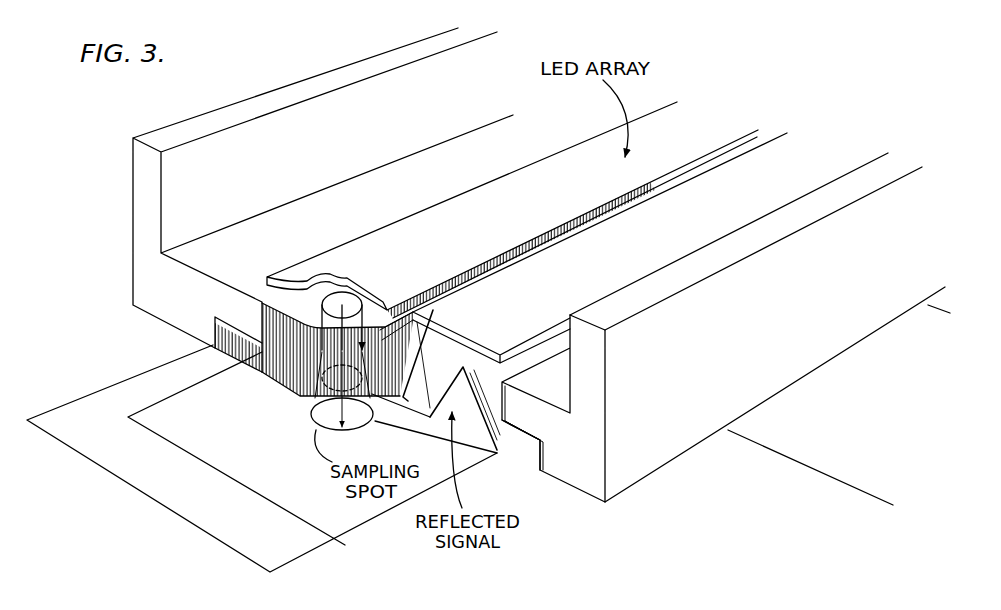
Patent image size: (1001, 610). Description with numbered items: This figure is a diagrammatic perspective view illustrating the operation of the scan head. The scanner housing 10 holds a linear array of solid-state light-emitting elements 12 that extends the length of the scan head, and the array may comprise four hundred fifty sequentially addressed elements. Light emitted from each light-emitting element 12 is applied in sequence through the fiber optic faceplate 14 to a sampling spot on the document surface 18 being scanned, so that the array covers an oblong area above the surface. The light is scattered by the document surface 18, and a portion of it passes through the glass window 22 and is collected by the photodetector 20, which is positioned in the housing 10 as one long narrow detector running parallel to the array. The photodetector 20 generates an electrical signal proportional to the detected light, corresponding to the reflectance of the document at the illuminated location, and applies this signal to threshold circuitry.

The housing 10 is at (145, 220).
The light-emitting elements 12 is at (333, 303).
The fiber optic faceplate 14 is at (240, 352).
The document surface 18 is at (190, 497).
The photodetector 20 is at (777, 168).
The glass window 22 is at (514, 448).